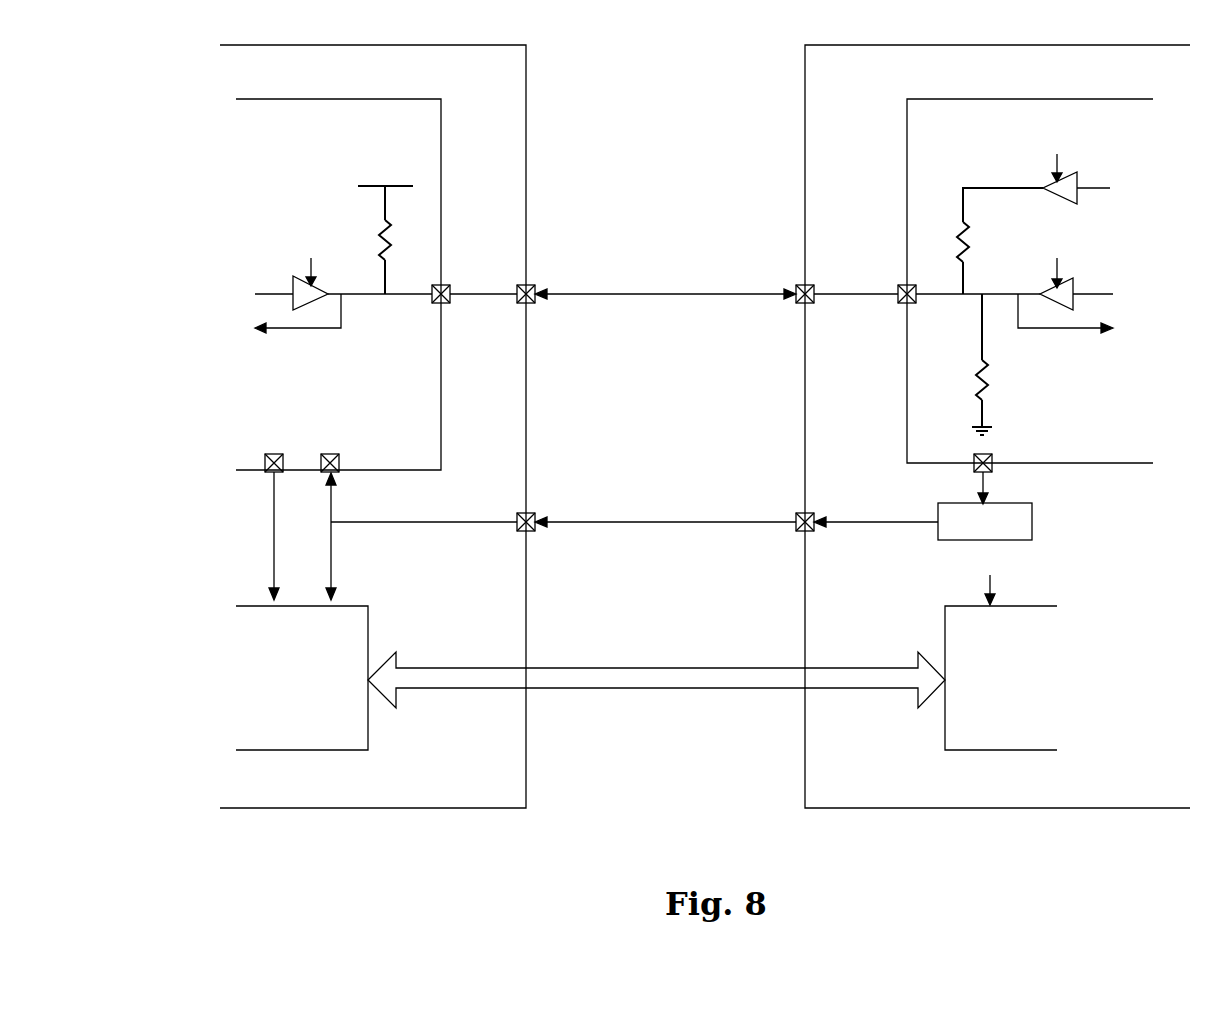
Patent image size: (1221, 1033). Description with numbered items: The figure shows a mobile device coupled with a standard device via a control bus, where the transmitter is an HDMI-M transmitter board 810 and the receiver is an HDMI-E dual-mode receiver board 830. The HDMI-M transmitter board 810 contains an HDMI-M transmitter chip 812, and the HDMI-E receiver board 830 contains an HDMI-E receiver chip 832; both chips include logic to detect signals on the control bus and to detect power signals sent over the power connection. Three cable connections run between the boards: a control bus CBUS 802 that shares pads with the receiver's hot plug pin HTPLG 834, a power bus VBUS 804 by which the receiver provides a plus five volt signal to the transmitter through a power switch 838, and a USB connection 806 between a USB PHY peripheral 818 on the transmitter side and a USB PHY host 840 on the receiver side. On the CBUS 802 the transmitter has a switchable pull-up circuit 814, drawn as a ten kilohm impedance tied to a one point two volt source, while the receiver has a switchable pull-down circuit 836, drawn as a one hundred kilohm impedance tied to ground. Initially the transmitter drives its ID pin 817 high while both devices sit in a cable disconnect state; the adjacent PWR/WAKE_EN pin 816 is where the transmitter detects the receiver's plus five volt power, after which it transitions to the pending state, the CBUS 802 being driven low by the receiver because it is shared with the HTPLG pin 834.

The HDMI-M transmitter board 810 is at (373, 426).
The HDMI-M transmitter chip 812 is at (338, 284).
The switchable pull-up circuit 814 is at (332, 251).
The PWR/WAKE_EN pin 816 is at (415, 511).
The ID pin 817 is at (268, 511).
The USB PHY peripheral 818 is at (302, 678).
The control bus CBUS 802 is at (665, 305).
The power bus VBUS 804 is at (736, 532).
The USB connection 806 is at (656, 689).
The HDMI-E receiver board 830 is at (997, 426).
The HDMI-E receiver chip 832 is at (1030, 281).
The hot plug pin (HTPLG) 834 is at (1037, 224).
The switchable pull-down circuit 836 is at (1041, 346).
The power switch 838 is at (1015, 497).
The USB PHY host 840 is at (1001, 662).